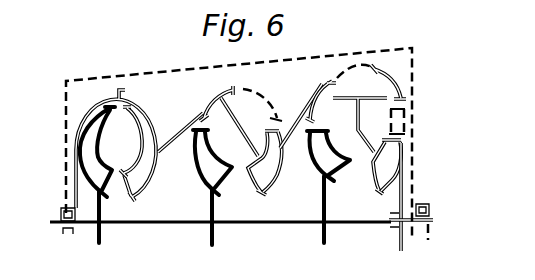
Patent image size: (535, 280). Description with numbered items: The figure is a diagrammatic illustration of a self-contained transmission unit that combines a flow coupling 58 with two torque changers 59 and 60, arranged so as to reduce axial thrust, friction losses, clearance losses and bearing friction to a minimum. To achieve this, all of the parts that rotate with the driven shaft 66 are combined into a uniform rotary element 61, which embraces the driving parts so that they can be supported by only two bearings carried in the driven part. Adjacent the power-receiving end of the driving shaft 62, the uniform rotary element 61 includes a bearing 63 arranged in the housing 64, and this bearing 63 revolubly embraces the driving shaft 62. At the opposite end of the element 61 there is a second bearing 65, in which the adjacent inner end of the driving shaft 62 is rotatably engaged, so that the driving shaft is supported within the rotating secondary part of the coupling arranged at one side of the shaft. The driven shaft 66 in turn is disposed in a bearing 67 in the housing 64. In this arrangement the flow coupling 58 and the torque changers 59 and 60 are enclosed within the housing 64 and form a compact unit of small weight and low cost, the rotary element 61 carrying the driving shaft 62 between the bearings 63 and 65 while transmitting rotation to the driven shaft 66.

The flow coupling 58 is at (139, 106).
The torque changer 59 is at (277, 91).
The torque changer 60 is at (393, 78).
The uniform rotary element 61 is at (180, 131).
The driving shaft 62 is at (164, 219).
The bearing 63 is at (58, 226).
The housing 64 is at (212, 71).
The bearing 65 is at (391, 231).
The driven shaft 66 is at (434, 220).
The bearing 67 is at (420, 206).